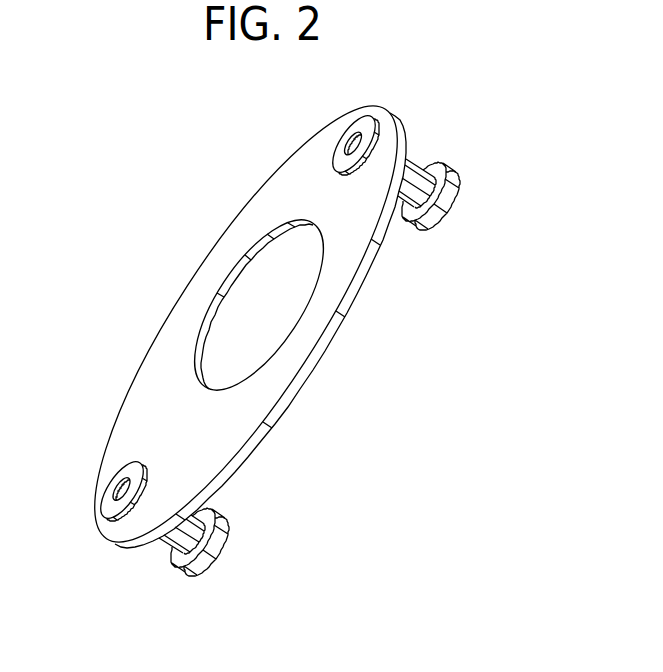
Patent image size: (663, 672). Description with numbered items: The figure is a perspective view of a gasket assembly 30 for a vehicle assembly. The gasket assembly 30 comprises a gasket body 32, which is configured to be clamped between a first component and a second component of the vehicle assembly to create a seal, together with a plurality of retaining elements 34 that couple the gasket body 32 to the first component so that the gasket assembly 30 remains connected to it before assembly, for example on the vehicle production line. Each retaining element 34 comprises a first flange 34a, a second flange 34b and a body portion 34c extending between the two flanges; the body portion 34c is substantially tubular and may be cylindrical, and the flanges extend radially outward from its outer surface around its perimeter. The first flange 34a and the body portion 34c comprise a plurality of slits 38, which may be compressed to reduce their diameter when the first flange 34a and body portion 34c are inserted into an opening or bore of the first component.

The gasket assembly 30 is at (476, 111).
The gasket body 32 is at (389, 111).
The retaining element 34 is at (457, 173).
The first flange 34a is at (222, 548).
The second flange 34b is at (133, 458).
The body portion 34c is at (162, 540).
The slits 38 is at (447, 203).